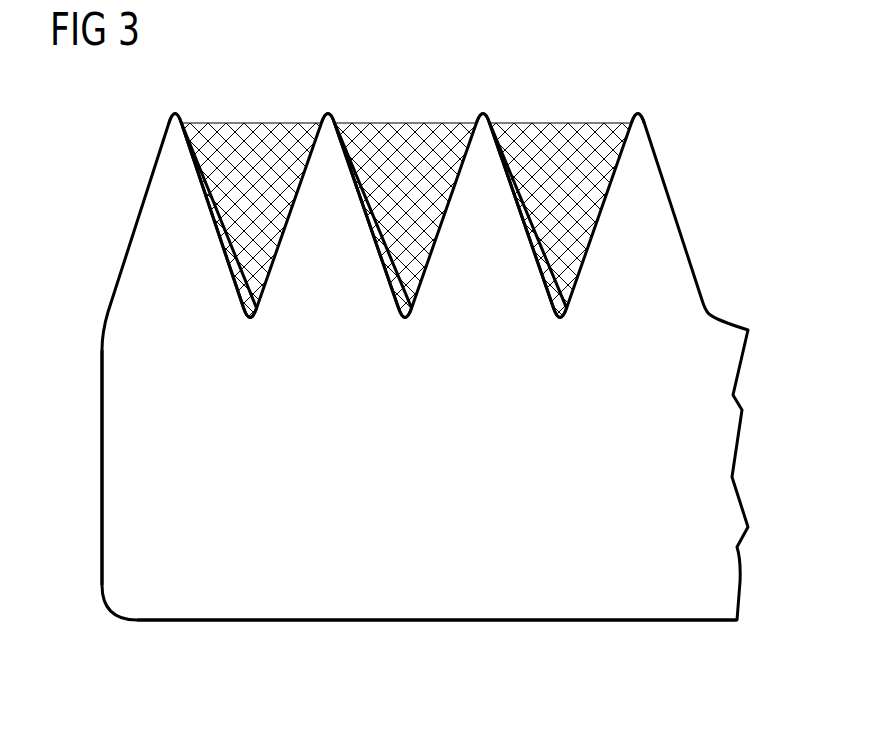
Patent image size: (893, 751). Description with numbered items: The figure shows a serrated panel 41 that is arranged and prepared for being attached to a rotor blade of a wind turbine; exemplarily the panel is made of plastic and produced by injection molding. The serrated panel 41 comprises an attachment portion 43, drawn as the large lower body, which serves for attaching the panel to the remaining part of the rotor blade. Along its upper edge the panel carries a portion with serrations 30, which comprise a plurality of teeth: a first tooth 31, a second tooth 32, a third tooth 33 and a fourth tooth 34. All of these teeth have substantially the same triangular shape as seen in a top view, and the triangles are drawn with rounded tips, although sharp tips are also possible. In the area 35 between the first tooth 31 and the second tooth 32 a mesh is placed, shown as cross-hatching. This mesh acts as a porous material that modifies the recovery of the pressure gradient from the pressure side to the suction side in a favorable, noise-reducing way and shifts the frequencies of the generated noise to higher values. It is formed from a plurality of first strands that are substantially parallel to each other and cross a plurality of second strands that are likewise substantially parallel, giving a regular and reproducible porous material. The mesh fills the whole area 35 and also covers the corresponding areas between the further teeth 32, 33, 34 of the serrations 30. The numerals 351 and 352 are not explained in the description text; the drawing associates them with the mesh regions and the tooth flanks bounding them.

The serrations 30 is at (430, 78).
The first tooth 31 is at (162, 176).
The second tooth 32 is at (328, 150).
The third tooth 33 is at (483, 150).
The fourth tooth 34 is at (636, 150).
The area 35 is at (258, 150).
The filling material 351 is at (208, 140).
The groove wall 352 is at (240, 183).
The serrated panel 41 is at (315, 665).
The attachment portion 43 is at (140, 492).